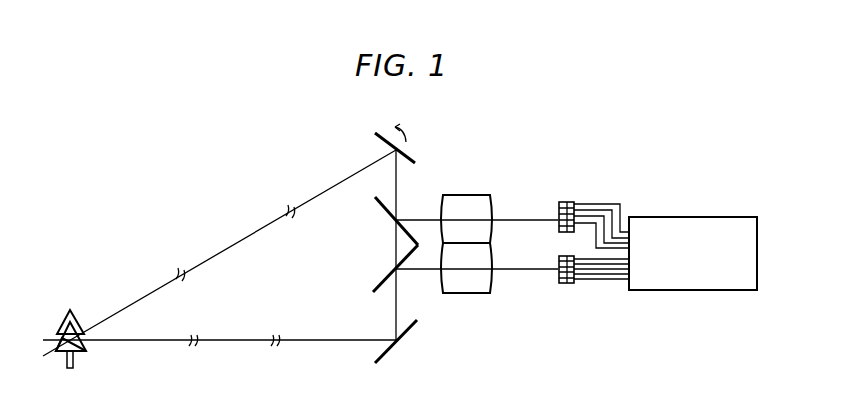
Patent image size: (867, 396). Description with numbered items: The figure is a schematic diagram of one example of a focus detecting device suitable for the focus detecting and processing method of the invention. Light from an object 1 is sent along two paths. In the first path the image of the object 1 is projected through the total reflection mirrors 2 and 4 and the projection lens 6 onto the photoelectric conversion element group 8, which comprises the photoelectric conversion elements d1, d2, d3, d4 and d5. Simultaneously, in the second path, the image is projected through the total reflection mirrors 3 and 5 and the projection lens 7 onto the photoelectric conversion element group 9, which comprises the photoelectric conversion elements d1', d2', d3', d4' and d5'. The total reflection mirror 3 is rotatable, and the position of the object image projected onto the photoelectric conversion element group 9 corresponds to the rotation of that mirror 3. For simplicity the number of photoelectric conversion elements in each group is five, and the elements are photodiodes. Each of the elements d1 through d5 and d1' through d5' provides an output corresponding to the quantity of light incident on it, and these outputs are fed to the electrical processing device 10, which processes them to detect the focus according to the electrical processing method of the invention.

The object 1 is at (72, 318).
The total reflection mirror 2 is at (400, 344).
The total reflection mirror 3 is at (412, 156).
The total reflection mirror 4 is at (385, 274).
The total reflection mirror 5 is at (381, 208).
The projection lens 6 is at (468, 290).
The projection lens 7 is at (452, 200).
The photoelectric conversion element group 8 is at (576, 282).
The photoelectric conversion element group 9 is at (575, 205).
The electrical processing device 10 is at (677, 217).
The photoelectric conversion element d1 is at (575, 306).
The photoelectric conversion element d2 is at (550, 306).
The photoelectric conversion element d3 is at (531, 307).
The photoelectric conversion element d4 is at (531, 290).
The photoelectric conversion element d5 is at (531, 255).
The photoelectric conversion element d1' is at (542, 239).
The photoelectric conversion element d2' is at (530, 203).
The photoelectric conversion element d3' is at (540, 190).
The photoelectric conversion element d4' is at (566, 172).
The photoelectric conversion element d5' is at (591, 174).